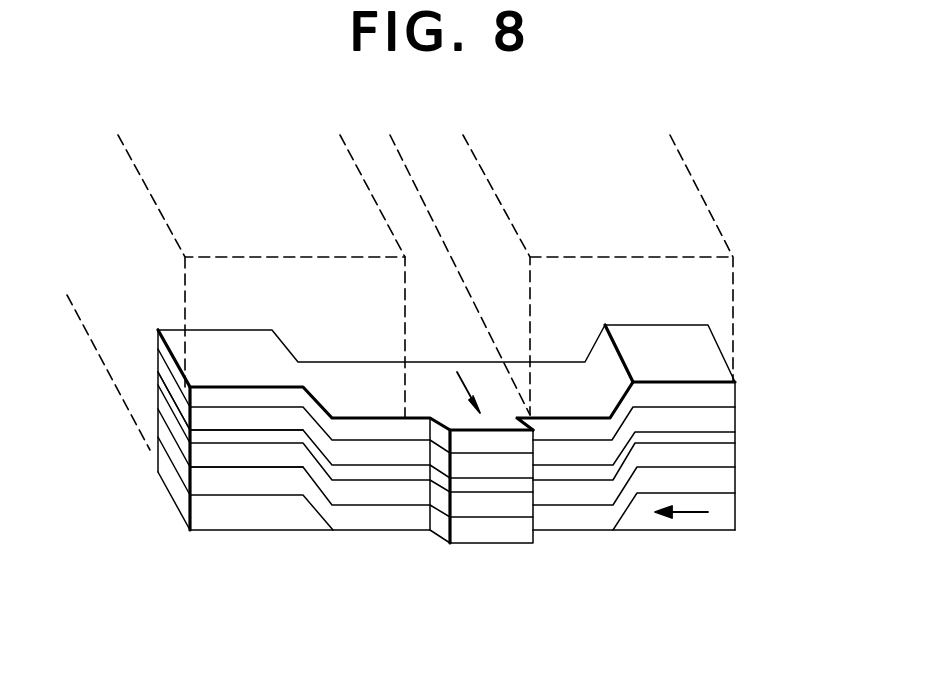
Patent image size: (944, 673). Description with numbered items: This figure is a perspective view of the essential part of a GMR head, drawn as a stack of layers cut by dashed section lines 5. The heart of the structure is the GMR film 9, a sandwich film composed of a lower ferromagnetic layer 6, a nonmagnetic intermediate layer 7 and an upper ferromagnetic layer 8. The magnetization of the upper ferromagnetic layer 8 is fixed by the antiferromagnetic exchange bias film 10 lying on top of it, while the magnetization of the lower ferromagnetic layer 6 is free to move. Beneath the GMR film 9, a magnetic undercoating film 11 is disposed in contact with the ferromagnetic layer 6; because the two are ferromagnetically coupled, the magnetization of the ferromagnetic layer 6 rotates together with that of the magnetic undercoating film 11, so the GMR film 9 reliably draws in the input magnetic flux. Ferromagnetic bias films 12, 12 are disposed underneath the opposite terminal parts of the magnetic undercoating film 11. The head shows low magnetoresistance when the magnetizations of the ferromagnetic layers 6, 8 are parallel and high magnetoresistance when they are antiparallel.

The cutting line 5 is at (180, 178).
The ferromagnetic layer 6 is at (203, 455).
The nonmagnetic intermediate layer 7 is at (193, 438).
The ferromagnetic layer 8 is at (200, 418).
The GMR film 9 is at (107, 442).
The antiferromagnetic exchange bias film 10 is at (713, 395).
The magnetic undercoating film 11 is at (712, 482).
The ferromagnetic bias film 12 is at (717, 510).